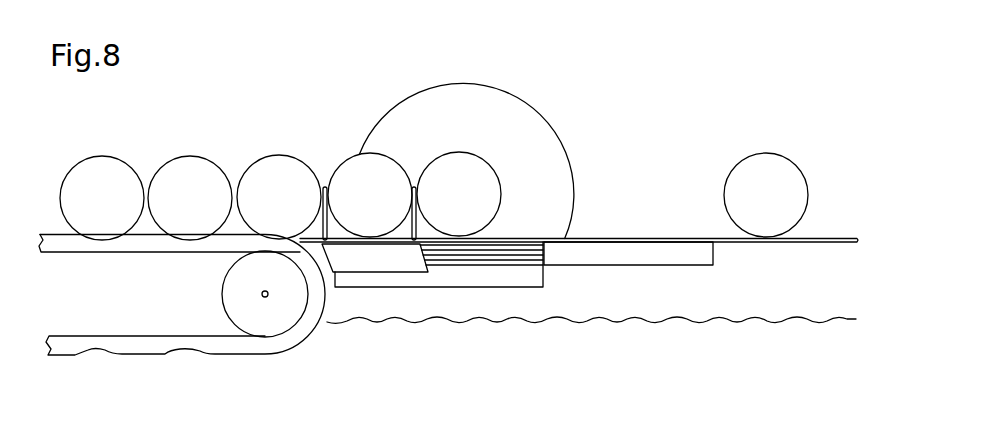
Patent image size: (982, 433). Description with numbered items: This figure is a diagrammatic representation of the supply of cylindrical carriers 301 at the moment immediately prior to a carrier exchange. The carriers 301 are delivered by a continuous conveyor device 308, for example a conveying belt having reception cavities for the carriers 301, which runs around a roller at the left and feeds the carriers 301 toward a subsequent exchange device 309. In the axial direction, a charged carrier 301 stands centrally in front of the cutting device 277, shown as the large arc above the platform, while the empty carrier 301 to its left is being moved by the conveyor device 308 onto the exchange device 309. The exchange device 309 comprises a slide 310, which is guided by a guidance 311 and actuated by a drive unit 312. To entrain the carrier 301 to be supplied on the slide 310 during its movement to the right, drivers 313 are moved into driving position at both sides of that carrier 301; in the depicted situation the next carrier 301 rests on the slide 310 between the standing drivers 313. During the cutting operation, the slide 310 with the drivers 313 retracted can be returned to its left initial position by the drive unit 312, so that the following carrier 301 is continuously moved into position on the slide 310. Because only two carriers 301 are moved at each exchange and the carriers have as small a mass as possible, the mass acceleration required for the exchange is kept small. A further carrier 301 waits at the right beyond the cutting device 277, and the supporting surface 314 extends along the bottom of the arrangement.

The carrier 301 is at (133, 165).
The drivers 313 is at (407, 203).
The cutting device 277 is at (547, 115).
The conveyor device 308 is at (237, 357).
The exchange device 309 is at (450, 291).
The slide 310 is at (373, 276).
The guidance 311 is at (525, 290).
The drive unit 312 is at (605, 266).
The table surface 314 is at (798, 243).